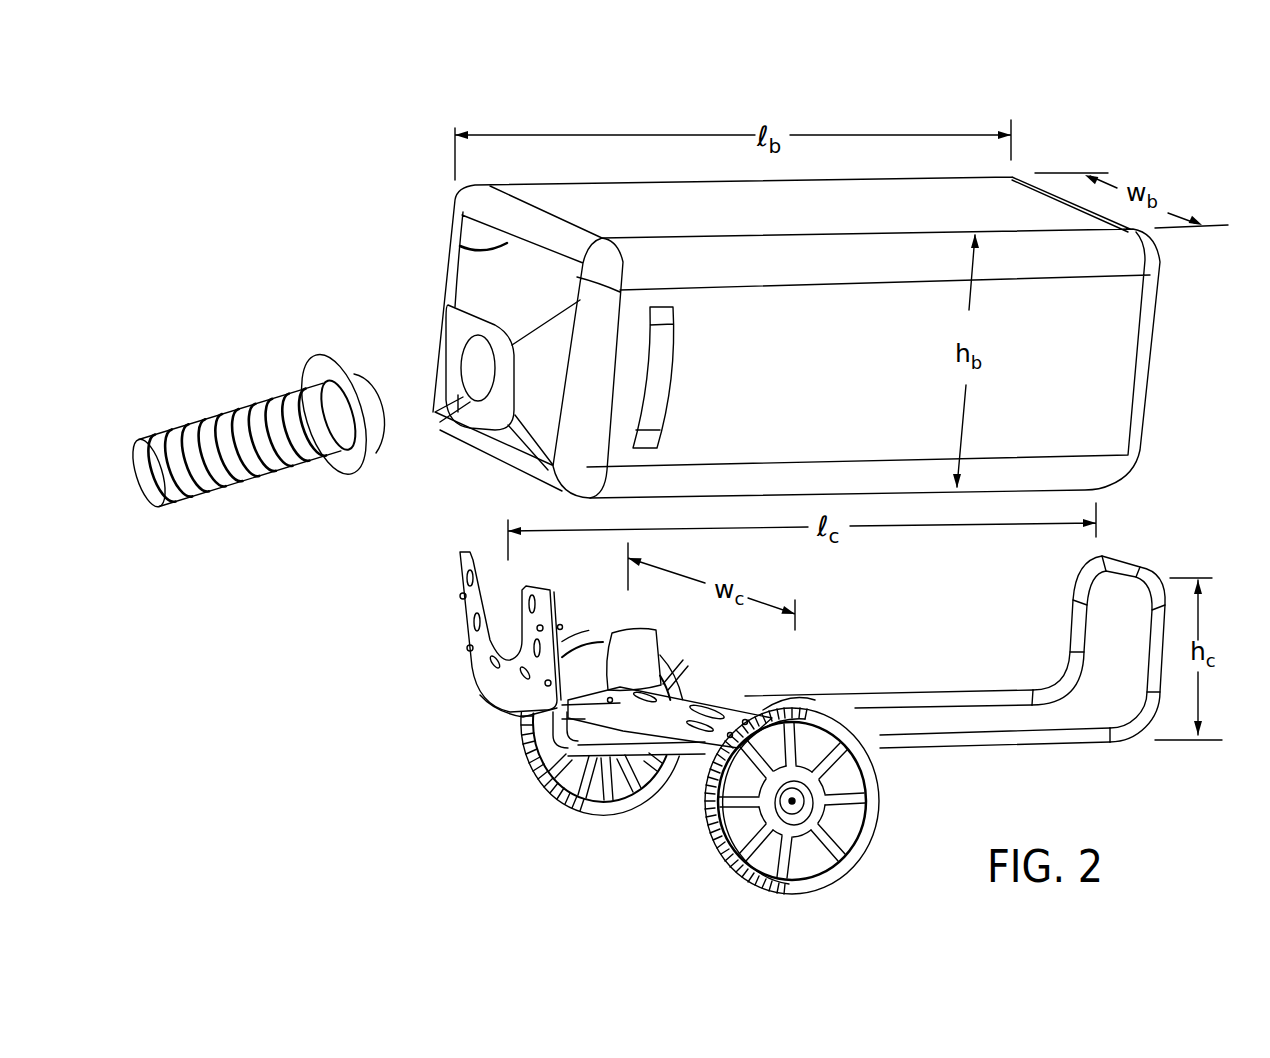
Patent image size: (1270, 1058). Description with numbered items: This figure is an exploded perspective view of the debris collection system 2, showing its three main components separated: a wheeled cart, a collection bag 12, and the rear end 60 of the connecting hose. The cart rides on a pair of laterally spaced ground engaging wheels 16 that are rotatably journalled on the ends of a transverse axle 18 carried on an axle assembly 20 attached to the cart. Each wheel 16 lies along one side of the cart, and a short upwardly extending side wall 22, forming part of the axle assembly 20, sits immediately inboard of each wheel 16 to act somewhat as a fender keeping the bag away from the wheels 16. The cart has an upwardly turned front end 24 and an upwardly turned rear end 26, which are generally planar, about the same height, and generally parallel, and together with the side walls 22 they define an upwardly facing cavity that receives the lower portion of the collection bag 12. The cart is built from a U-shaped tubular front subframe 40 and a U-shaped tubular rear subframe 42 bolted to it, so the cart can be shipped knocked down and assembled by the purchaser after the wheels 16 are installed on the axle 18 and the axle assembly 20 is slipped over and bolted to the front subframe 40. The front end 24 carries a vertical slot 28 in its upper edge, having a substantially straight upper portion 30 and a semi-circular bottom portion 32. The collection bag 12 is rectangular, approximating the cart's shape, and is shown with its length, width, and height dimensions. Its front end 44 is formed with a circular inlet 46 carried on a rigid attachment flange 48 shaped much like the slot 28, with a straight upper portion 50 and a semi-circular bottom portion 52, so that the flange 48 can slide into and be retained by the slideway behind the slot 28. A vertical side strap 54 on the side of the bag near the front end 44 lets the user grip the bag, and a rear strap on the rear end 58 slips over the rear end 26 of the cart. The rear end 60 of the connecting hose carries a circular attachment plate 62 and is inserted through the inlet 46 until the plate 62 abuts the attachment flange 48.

The debris collection system 2 is at (708, 118).
The collection bag 12 is at (530, 812).
The ground engaging wheels 16 is at (668, 647).
The transverse axle 18 is at (700, 760).
The axle assembly 20 is at (692, 688).
The side walls 22 is at (635, 642).
The front end 24 is at (458, 609).
The rear end 26 is at (1147, 654).
The vertical slot 28 is at (492, 575).
The upper portion 30 is at (523, 590).
The bottom portion 32 is at (495, 688).
The front subframe 40 is at (638, 750).
The rear subframe 42 is at (938, 695).
The front end 44 is at (462, 236).
The circular inlet 46 is at (473, 360).
The attachment flange 48 is at (453, 323).
The upper portion 50 is at (515, 362).
The bottom portion 52 is at (480, 430).
The side straps 54 is at (665, 358).
The rear end 58 is at (1152, 325).
The rear end 60 is at (378, 395).
The attachment plate 62 is at (328, 360).